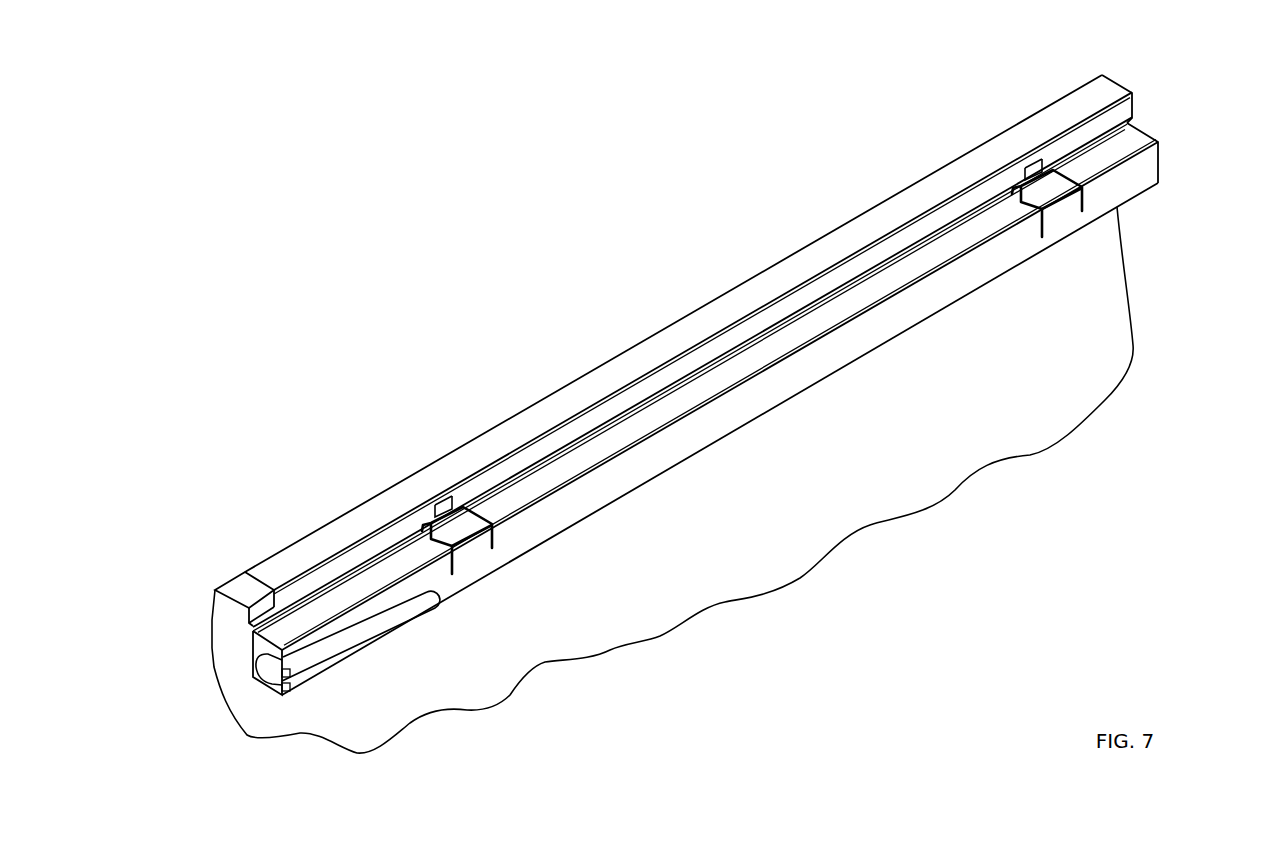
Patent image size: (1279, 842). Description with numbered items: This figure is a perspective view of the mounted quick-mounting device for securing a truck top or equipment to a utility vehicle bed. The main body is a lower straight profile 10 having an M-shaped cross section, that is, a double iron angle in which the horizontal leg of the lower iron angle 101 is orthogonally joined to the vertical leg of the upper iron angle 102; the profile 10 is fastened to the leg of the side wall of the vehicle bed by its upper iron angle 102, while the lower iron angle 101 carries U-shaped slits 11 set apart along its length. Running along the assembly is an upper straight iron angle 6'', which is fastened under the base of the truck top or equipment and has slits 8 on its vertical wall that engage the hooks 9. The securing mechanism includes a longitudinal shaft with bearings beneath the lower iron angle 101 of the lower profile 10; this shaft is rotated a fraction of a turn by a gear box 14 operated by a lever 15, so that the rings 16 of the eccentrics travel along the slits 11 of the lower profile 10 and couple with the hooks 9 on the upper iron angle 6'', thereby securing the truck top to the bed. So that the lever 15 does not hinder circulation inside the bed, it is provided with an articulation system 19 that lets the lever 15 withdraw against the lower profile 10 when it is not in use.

The upper straight iron angle 6'' is at (688, 334).
The slits 8 is at (1024, 171).
The hooks 9 is at (1036, 166).
The lower straight profile 10 is at (1164, 131).
The lower iron angle 101 is at (1130, 182).
The upper iron angle 102 is at (240, 588).
The U-shaped slits 11 is at (1085, 204).
The gear box 14 is at (268, 683).
The lever 15 is at (355, 643).
The rings 16 is at (1015, 188).
The articulation system 19 is at (286, 696).